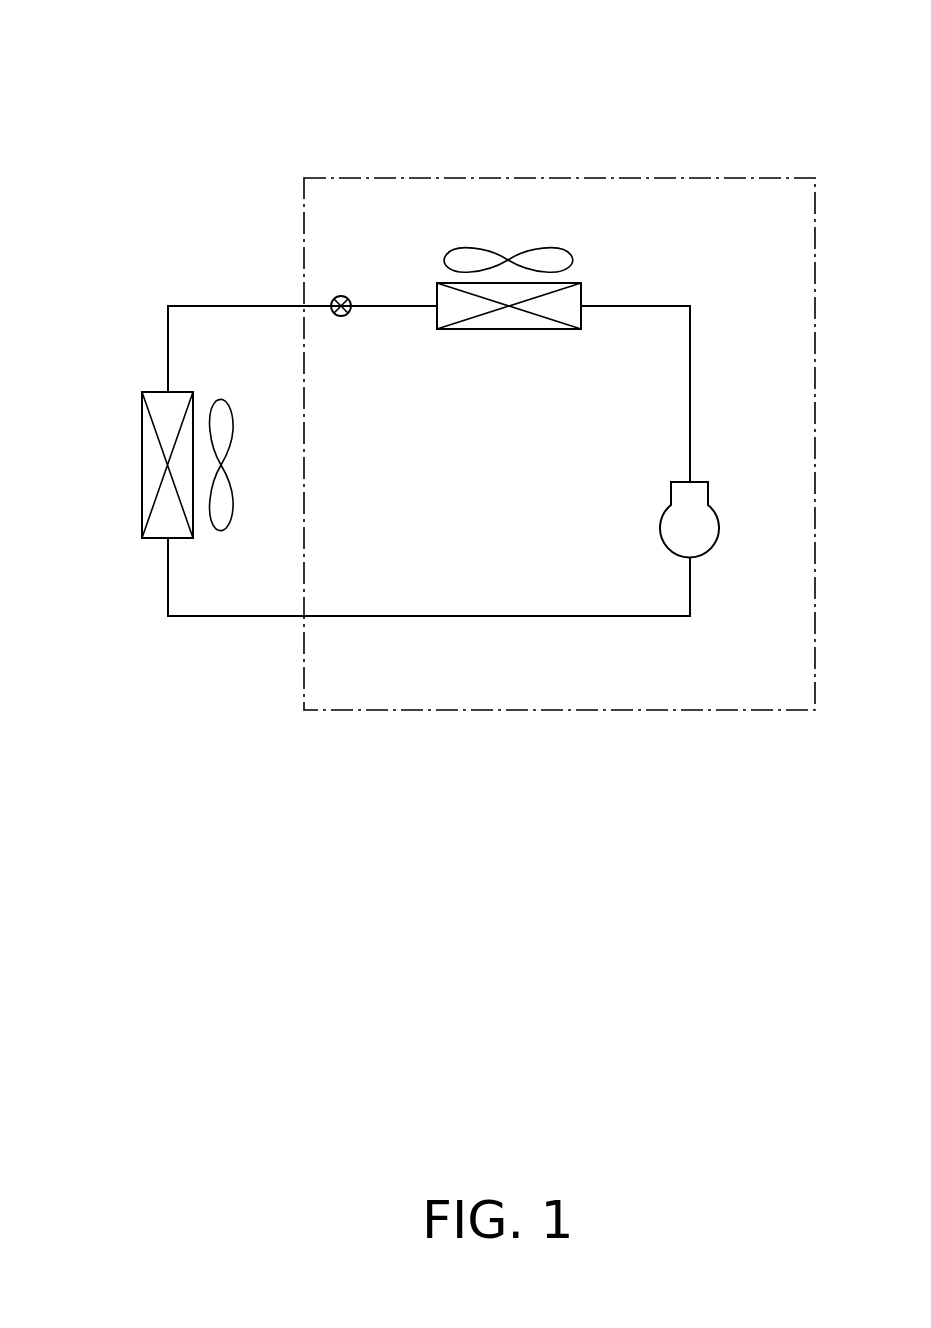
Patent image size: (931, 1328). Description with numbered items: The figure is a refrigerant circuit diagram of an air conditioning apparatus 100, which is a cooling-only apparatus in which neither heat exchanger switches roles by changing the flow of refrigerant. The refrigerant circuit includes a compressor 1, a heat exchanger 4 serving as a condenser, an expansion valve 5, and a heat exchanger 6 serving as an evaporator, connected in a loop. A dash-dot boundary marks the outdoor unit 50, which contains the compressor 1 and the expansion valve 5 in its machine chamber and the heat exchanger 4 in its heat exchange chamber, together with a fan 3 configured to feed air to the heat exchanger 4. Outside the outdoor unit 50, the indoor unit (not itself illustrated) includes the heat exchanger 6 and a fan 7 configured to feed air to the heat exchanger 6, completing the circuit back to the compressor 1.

The air conditioning apparatus 100 is at (448, 145).
The outdoor unit 50 is at (756, 178).
The compressor 1 is at (719, 527).
The fan 3 is at (576, 253).
The heat exchanger (condenser) 4 is at (508, 330).
The expansion valve 5 is at (342, 296).
The heat exchanger (evaporator) 6 is at (142, 468).
The fan 7 is at (233, 433).